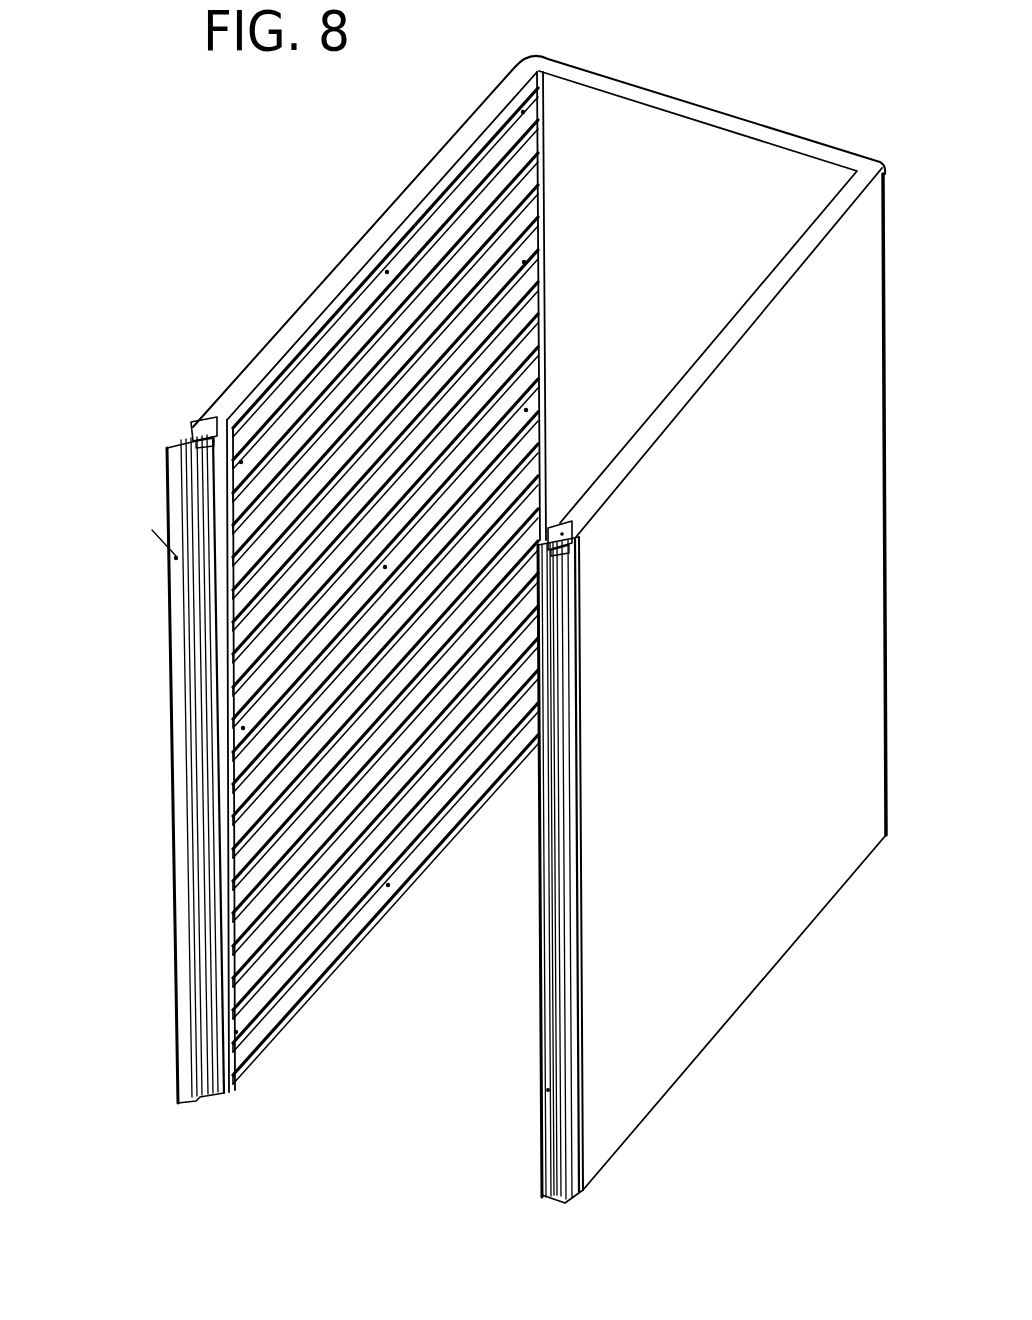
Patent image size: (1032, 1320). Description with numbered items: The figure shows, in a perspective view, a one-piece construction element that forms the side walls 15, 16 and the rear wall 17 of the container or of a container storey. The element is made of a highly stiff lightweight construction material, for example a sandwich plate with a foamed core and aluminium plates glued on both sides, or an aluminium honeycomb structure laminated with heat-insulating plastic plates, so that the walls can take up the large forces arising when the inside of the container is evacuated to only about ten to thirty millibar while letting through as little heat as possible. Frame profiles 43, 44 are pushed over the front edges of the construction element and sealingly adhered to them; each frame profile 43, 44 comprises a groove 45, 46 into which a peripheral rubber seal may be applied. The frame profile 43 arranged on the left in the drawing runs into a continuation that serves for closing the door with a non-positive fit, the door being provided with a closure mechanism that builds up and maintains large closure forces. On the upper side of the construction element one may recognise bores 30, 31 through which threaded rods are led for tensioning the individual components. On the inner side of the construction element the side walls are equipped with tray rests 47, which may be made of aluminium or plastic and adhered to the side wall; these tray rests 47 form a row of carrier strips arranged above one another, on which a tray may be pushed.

The side wall 15 is at (313, 364).
The side wall 16 is at (755, 723).
The rear wall 17 is at (667, 272).
The bore 30 is at (214, 418).
The bore 31 is at (563, 523).
The frame profile 43 is at (220, 837).
The frame profile 44 is at (573, 1028).
The groove 45 is at (197, 958).
The groove 46 is at (553, 1092).
The tray rest 47 is at (417, 738).